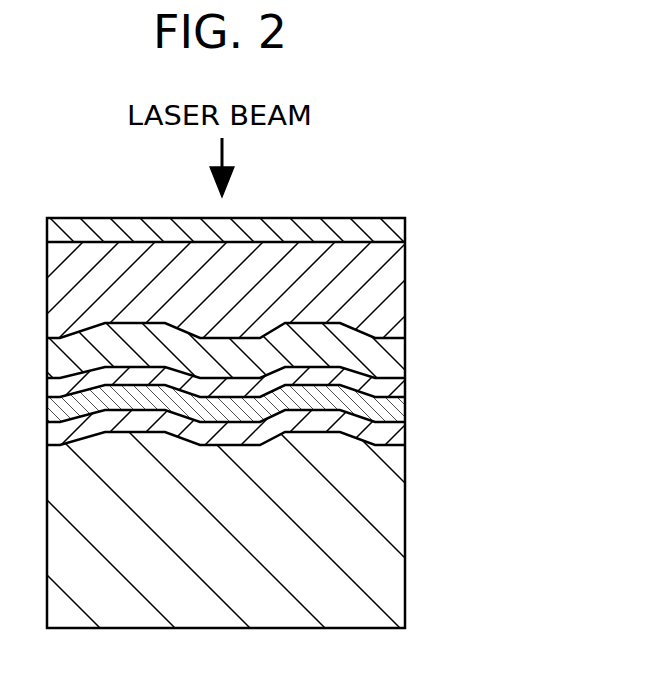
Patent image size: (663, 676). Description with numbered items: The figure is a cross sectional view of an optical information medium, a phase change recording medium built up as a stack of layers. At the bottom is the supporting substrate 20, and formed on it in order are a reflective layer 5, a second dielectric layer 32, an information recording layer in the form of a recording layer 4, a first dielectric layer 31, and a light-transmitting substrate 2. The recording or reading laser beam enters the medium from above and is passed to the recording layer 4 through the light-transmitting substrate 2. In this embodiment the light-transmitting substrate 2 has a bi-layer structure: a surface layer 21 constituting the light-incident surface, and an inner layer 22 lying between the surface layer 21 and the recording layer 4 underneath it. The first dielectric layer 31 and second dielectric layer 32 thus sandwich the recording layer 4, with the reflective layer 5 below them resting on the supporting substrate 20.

The light-transmitting substrate 2 is at (290, 253).
The surface layer 21 is at (405, 226).
The inner layer 22 is at (405, 280).
The first dielectric layer 31 is at (405, 353).
The recording layer 4 is at (405, 388).
The second dielectric layer 32 is at (405, 412).
The reflective layer 5 is at (405, 430).
The supporting substrate 20 is at (405, 480).